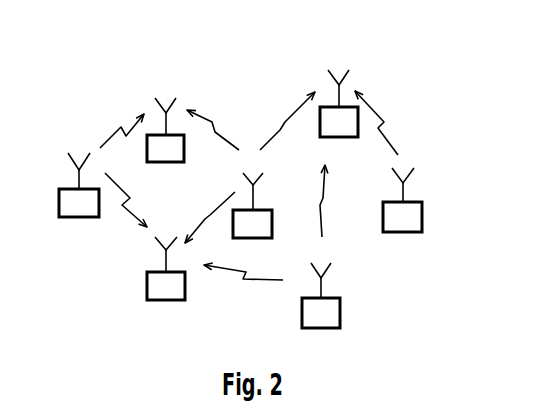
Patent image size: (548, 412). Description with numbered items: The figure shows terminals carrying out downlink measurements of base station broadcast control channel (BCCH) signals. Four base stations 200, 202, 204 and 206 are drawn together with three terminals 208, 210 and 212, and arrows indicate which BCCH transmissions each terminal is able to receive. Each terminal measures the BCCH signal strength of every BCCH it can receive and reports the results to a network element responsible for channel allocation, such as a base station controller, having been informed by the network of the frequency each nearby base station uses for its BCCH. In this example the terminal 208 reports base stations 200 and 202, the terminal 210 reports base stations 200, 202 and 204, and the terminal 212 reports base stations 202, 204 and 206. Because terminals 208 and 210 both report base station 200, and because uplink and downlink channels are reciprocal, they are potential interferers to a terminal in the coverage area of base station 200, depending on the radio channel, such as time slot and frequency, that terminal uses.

The base station 200 is at (75, 217).
The base station 202 is at (249, 238).
The base station 204 is at (318, 328).
The base station 206 is at (400, 232).
The terminal 208 is at (163, 162).
The terminal 210 is at (163, 300).
The terminal 212 is at (336, 137).